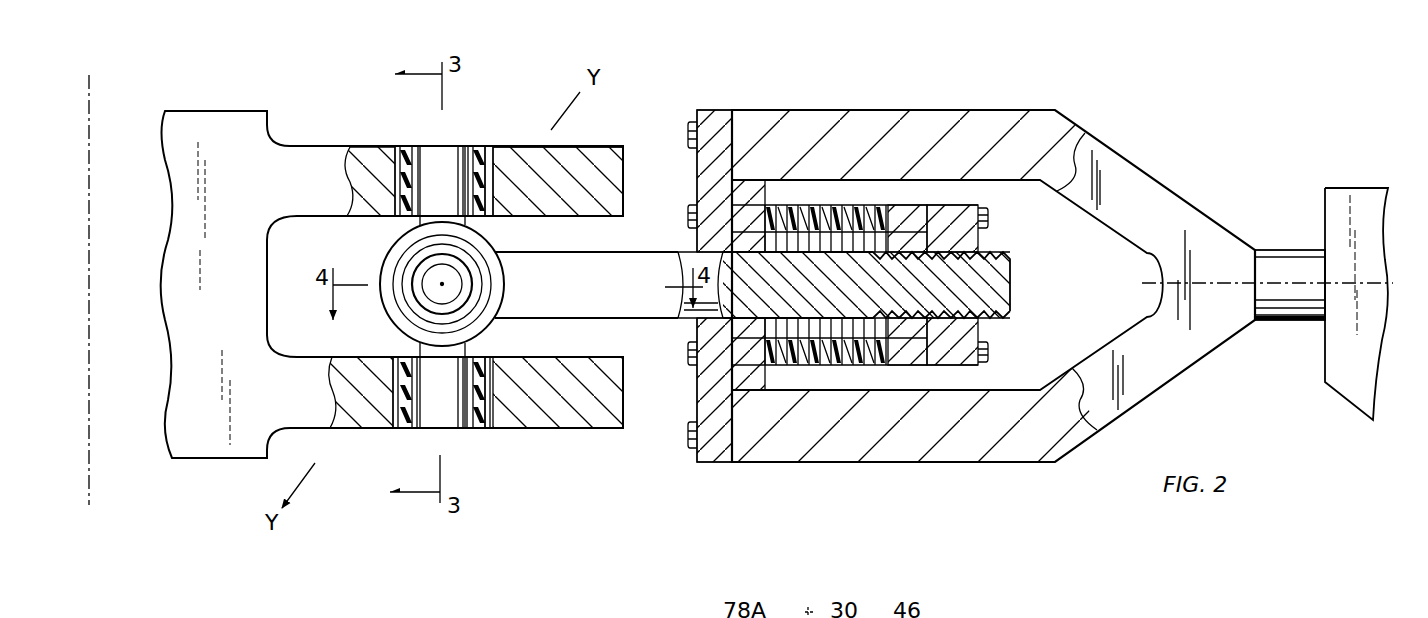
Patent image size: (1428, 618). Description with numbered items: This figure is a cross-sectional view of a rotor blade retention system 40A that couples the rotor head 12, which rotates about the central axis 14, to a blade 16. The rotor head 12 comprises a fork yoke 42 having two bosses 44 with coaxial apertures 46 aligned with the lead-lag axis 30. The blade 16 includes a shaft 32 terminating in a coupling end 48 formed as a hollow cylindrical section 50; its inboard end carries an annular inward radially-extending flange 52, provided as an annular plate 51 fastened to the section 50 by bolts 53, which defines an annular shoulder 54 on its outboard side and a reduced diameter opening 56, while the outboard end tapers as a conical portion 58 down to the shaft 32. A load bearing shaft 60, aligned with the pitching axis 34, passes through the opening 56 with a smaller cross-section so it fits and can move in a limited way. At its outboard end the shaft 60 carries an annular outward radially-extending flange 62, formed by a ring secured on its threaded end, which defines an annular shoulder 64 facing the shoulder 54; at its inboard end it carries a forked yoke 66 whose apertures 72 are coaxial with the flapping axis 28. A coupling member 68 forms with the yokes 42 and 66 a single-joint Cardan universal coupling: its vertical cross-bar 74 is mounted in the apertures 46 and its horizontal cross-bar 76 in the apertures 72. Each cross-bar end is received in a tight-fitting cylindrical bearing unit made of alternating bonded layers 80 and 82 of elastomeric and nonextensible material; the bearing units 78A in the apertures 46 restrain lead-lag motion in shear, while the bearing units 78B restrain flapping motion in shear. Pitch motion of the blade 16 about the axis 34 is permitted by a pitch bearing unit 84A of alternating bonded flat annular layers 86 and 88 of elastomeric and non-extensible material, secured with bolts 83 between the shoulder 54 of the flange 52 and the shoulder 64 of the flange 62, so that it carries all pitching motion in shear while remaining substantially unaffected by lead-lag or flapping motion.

The rotor head 12 is at (245, 128).
The central axis 14 is at (93, 124).
The blade 16 is at (1347, 367).
The flapping axis 28 is at (444, 283).
The lead-lag axis 30 is at (442, 103).
The shaft 32 is at (1298, 250).
The pitching axis 34 is at (1305, 300).
The rotor blade retention system 40A is at (1018, 520).
The fork yoke 42 is at (590, 146).
The bosses 44 is at (623, 170).
The apertures 46 is at (483, 216).
The coupling end 48 is at (950, 108).
The hollow cylindrical section 50 is at (953, 450).
The annular plate 51 is at (715, 110).
The annular inward radially-extending flange 52 is at (705, 172).
The bolts 53 is at (688, 125).
The annular shoulder 54 is at (735, 192).
The reduced diameter opening 56 is at (715, 328).
The conical portion 58 is at (1135, 168).
The load bearing shaft 60 is at (672, 262).
The annular outward radially-extending flange 62 is at (982, 240).
The annular shoulder 64 is at (915, 216).
The forked yoke 66 is at (560, 250).
The coupling member 68 is at (437, 160).
The apertures 72 is at (480, 298).
The vertical cross-bar 74 is at (437, 213).
The horizontal cross-bar 76 is at (432, 297).
The bearing units 78A is at (404, 146).
The bearing units 78B is at (475, 315).
The elastomeric layers 80 is at (410, 172).
The nonextensible layers 82 is at (425, 186).
The bolts 83 is at (688, 215).
The pitch bearing unit 84A is at (855, 188).
The elastomeric annular layers 86 is at (770, 215).
The non-extensible annular layers 88 is at (785, 210).